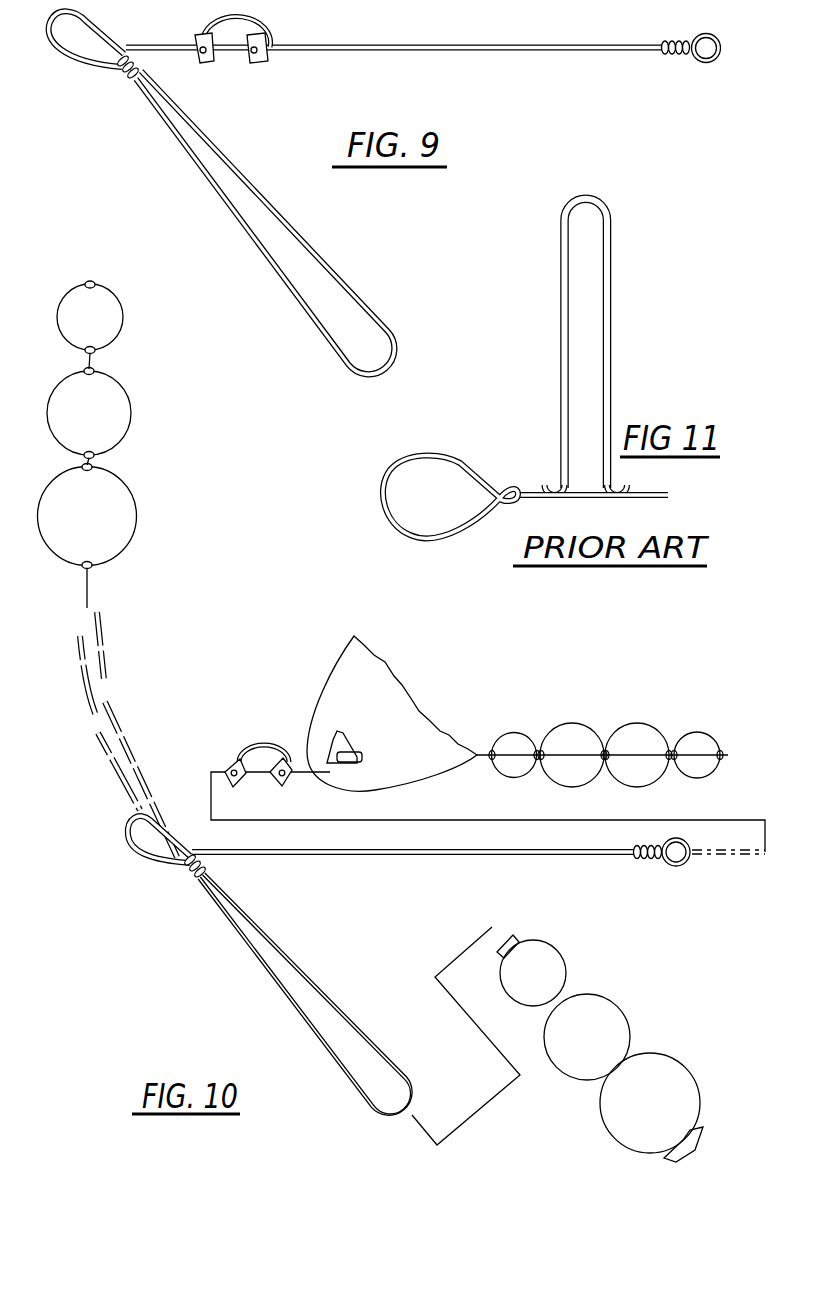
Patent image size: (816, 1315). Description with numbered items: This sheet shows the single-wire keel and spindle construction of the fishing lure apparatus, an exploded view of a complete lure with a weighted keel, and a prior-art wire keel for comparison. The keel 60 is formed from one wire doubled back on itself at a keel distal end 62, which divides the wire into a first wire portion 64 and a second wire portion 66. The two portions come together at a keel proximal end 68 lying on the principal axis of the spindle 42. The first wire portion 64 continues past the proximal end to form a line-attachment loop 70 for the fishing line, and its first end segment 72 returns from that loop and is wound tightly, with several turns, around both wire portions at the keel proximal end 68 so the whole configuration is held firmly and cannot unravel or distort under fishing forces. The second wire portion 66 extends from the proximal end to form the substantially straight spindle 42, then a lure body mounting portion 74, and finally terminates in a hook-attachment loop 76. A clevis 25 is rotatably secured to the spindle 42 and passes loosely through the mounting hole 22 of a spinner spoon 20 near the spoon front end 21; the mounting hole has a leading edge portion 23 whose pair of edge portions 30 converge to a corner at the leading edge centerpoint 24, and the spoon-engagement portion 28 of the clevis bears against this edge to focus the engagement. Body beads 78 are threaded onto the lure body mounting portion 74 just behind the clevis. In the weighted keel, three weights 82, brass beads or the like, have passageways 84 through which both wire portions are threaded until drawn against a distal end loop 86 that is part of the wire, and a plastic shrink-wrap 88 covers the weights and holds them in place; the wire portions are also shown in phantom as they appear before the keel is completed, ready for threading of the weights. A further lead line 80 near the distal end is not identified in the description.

In FIG. 10, the spoon 20 is at (330, 690).
In FIG. 10, the front end 21 is at (318, 787).
In FIG. 10, the mounting hole 22 is at (343, 741).
In FIG. 10, the leading edge portion 23 is at (335, 745).
In FIG. 10, the leading edge centerpoint 24 is at (323, 772).
In FIG. 9, the clevis 25 is at (258, 18).
In FIG. 10, the clevis 25 is at (242, 762).
In FIG. 10, the spoon-engagement portion 28 is at (278, 762).
In FIG. 10, the edge portions 30 is at (363, 756).
In FIG. 9, the spindle 42 is at (155, 44).
In FIG. 10, the spindle 42 is at (395, 858).
In FIG. 9, the keel 60 is at (276, 213).
In FIG. 9, the keel distal end 62 is at (398, 356).
In FIG. 10, the keel distal end 62 is at (414, 1093).
In FIG. 9, the first wire portion 64 is at (334, 273).
In FIG. 10, the first wire portion 64 is at (100, 755).
In FIG. 9, the second wire portion 66 is at (333, 52).
In FIG. 10, the second wire portion 66 is at (121, 719).
In FIG. 9, the keel proximal end 68 is at (132, 84).
In FIG. 10, the keel proximal end 68 is at (186, 878).
In FIG. 9, the line-attachment loop 70 is at (77, 64).
In FIG. 10, the line-attachment loop 70 is at (128, 850).
In FIG. 9, the first end segment 72 is at (141, 69).
In FIG. 10, the first end segment 72 is at (208, 872).
In FIG. 9, the lure body mounting portion 74 is at (484, 46).
In FIG. 10, the lure body mounting portion 74 is at (498, 856).
In FIG. 9, the hook-attachment loop 76 is at (704, 64).
In FIG. 10, the hook-attachment loop 76 is at (681, 866).
In FIG. 10, the body beads 78 is at (525, 735).
In FIG. 9, the arm end 80 is at (341, 333).
In FIG. 10, the weights 82 is at (115, 318).
In FIG. 10, the passageways 84 is at (96, 284).
In FIG. 10, the distal end loop 86 is at (385, 1118).
In FIG. 10, the plastic shrink-wrap 88 is at (612, 1012).